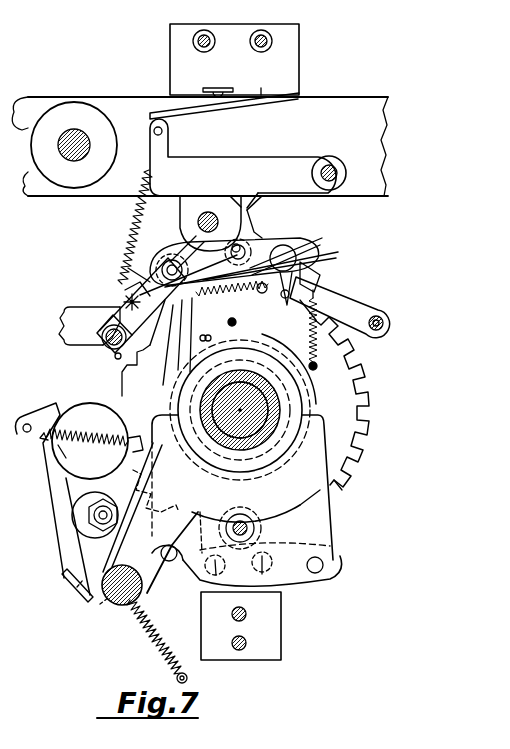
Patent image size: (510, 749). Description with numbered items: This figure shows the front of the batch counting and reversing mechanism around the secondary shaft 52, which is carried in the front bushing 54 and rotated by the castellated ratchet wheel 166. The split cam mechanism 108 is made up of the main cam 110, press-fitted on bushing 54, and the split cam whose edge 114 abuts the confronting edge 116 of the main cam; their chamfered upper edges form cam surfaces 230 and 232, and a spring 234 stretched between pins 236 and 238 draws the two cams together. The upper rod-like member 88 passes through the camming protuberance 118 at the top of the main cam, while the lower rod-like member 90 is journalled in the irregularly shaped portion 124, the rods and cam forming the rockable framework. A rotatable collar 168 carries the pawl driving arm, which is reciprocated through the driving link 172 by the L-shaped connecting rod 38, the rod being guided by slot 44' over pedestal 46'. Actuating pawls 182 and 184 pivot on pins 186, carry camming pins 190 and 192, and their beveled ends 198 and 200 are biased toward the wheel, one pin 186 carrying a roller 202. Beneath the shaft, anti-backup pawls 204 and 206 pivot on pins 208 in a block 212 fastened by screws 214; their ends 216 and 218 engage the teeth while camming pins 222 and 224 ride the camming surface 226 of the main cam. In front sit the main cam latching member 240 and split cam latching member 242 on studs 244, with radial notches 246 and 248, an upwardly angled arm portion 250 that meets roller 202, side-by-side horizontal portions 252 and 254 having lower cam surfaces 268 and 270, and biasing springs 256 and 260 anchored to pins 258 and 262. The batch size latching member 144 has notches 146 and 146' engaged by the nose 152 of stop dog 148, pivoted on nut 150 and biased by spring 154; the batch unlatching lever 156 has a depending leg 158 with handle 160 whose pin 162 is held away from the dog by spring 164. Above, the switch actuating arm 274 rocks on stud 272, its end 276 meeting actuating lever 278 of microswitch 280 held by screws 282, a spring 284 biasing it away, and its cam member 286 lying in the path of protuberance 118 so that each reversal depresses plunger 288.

The connecting rod 38 is at (357, 94).
The slot 44' is at (29, 102).
The pedestal 46' is at (74, 129).
The secondary shaft 52 is at (262, 423).
The front bushing 54 is at (288, 447).
The upper rod-like member 88 is at (232, 204).
The lower rod-like member 90 is at (93, 522).
The split cam mechanism 108 is at (335, 523).
The main cam 110 is at (299, 492).
The edge of split cam 114 is at (214, 334).
The edge of main cam 116 is at (250, 372).
The camming protuberance 118 is at (208, 197).
The irregularly shaped portion 124 is at (67, 549).
The batch size latching member 144 is at (65, 480).
The notch 146 is at (77, 448).
The notch 146' is at (87, 450).
The stop dog 148 is at (62, 572).
The nut 150 is at (92, 509).
The nose 152 is at (127, 426).
The spring 154 is at (64, 477).
The batch unlatching lever 156 is at (154, 600).
The depending leg 158 is at (70, 591).
The handle 160 is at (121, 606).
The pin 162 is at (106, 607).
The spring 164 is at (150, 648).
The ratchet wheel 166 is at (350, 494).
The rotatable collar 168 is at (340, 420).
The driving link 172 is at (60, 320).
The actuating pawl 182 is at (306, 256).
The actuating pawl 184 is at (135, 270).
The pin 186 is at (246, 208).
The camming pin 190 is at (313, 238).
The camming pin 192 is at (125, 298).
The pawl end 198 is at (320, 279).
The pawl end 200 is at (170, 356).
The roller 202 is at (170, 258).
The anti-backup pawl 204 is at (336, 578).
The anti-backup pawl 206 is at (211, 600).
The pin 208 is at (262, 578).
The block 212 is at (280, 656).
The screws 214 is at (248, 643).
The pawl portion 216 is at (332, 548).
The pawl portion 218 is at (188, 518).
The camming pin 222 is at (324, 566).
The camming pin 224 is at (176, 569).
The camming surface 226 is at (285, 565).
The cam surface 230 is at (260, 240).
The cam surface 232 is at (130, 286).
The spring 234 is at (268, 300).
The pin 236 is at (317, 303).
The pin 238 is at (212, 297).
The main cam latching member 240 is at (385, 309).
The split cam latching member 242 is at (97, 357).
The stud 244 is at (115, 361).
The radial notch 246 is at (318, 292).
The radial notch 248 is at (113, 316).
The arm portion 250 is at (136, 257).
The horizontal portion 252 is at (297, 262).
The horizontal portion 254 is at (180, 260).
The spring 256 is at (352, 364).
The pin 258 is at (320, 386).
The spring 260 is at (205, 336).
The pin 262 is at (238, 323).
The lower cam surface 268 is at (280, 252).
The lower cam surface 270 is at (231, 250).
The stud 272 is at (334, 162).
The switch actuating arm 274 is at (252, 154).
The vertically projecting end 276 is at (164, 143).
The actuating lever 278 is at (262, 104).
The microswitch 280 is at (289, 78).
The screws 282 is at (193, 41).
The spring 284 is at (136, 220).
The cam member 286 is at (268, 193).
The plunger 288 is at (220, 88).